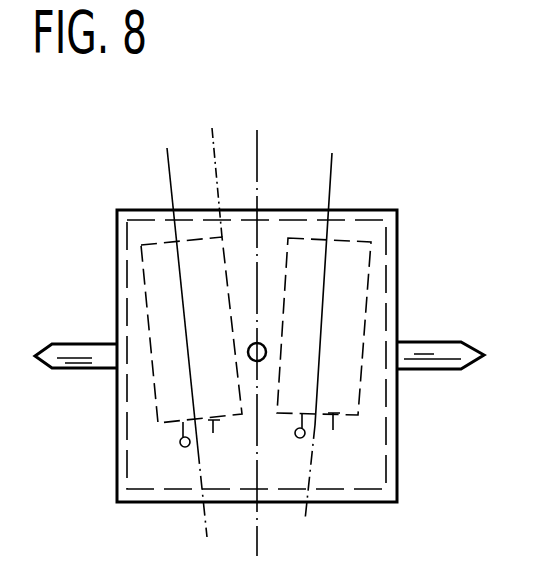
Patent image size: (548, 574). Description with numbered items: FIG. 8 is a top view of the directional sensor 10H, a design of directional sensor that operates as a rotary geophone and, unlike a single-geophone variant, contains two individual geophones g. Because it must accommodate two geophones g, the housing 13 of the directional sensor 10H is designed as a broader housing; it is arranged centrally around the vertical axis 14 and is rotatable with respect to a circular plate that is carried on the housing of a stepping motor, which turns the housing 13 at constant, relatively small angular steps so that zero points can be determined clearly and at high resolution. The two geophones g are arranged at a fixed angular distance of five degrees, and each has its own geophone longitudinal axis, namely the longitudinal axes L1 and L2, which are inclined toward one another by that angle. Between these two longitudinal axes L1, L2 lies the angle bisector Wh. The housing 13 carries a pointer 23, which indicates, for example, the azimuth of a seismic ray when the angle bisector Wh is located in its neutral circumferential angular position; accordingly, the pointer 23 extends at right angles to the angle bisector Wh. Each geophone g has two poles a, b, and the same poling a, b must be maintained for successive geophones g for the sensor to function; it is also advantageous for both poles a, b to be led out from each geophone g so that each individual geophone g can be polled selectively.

The directional sensor 10H is at (352, 142).
The housing 13 is at (105, 421).
The vertical axis 14 is at (263, 344).
The pointer 23 is at (67, 358).
The geophone g is at (150, 280).
The geophone longitudinal axis L1 is at (171, 189).
The geophone longitudinal axis L2 is at (332, 182).
The angle bisector Wh is at (258, 163).
The pole a is at (180, 447).
The pole b is at (213, 433).